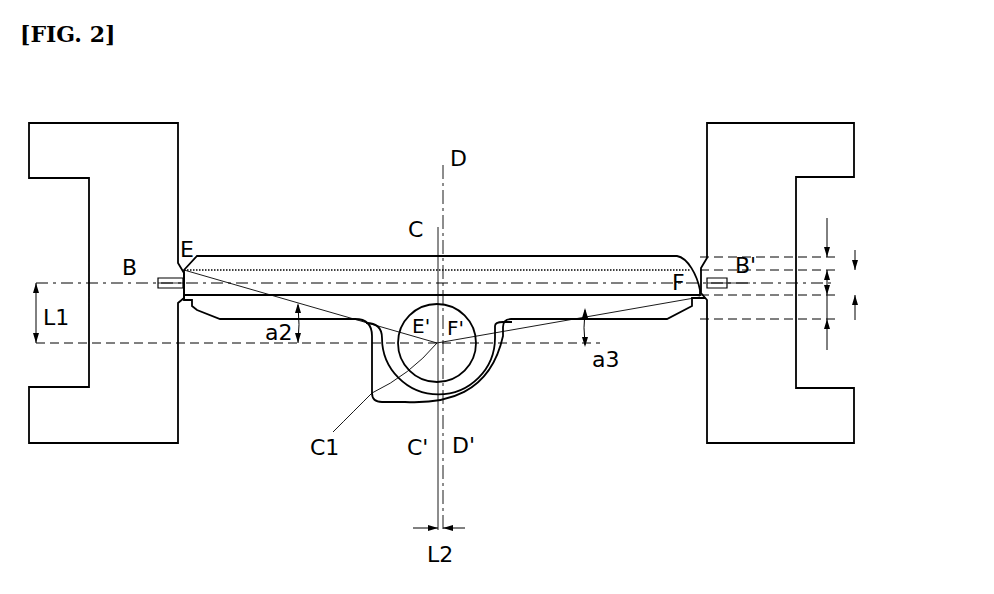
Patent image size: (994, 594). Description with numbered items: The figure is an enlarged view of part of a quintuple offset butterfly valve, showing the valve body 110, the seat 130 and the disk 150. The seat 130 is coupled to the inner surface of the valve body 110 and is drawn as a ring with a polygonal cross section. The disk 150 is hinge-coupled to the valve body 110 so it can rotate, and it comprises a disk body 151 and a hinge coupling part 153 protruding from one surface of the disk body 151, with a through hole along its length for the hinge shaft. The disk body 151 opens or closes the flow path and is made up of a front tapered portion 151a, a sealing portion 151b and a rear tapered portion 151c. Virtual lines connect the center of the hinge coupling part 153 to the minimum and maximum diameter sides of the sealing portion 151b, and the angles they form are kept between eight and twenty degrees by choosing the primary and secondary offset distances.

The valve body 110 is at (90, 423).
The seat 130 is at (168, 290).
The disk 150 is at (663, 334).
The disk body 151 is at (592, 277).
The front tapered portion 151a is at (828, 263).
The sealing portion 151b is at (858, 283).
The rear tapered portion 151c is at (828, 305).
The hinge coupling part 153 is at (478, 388).